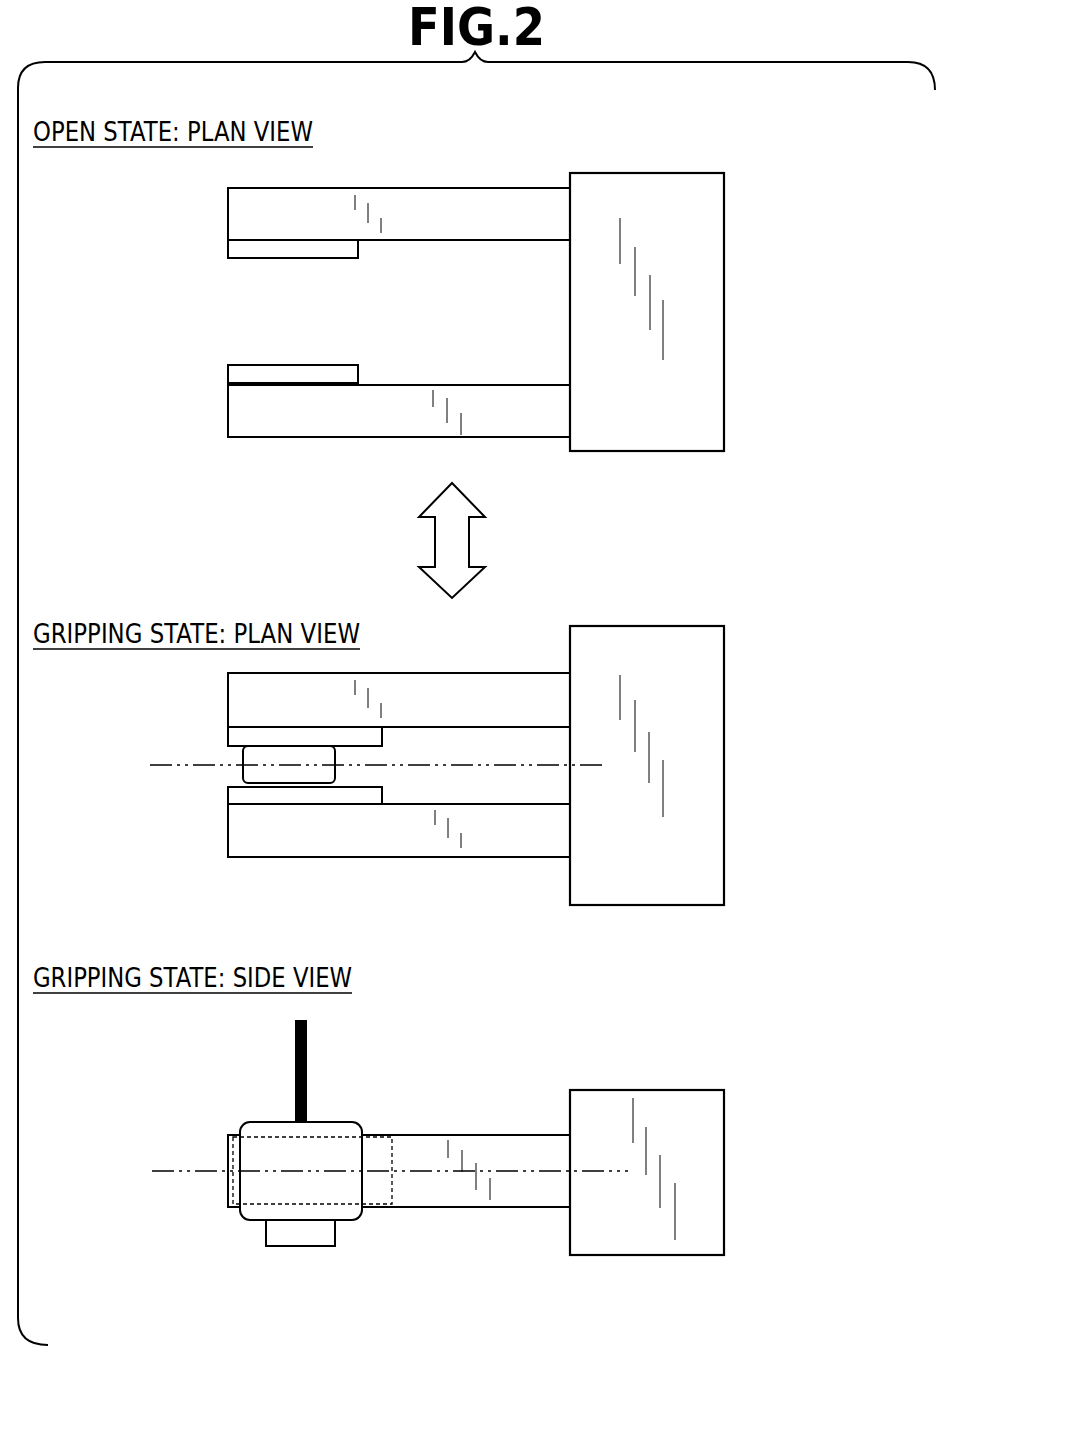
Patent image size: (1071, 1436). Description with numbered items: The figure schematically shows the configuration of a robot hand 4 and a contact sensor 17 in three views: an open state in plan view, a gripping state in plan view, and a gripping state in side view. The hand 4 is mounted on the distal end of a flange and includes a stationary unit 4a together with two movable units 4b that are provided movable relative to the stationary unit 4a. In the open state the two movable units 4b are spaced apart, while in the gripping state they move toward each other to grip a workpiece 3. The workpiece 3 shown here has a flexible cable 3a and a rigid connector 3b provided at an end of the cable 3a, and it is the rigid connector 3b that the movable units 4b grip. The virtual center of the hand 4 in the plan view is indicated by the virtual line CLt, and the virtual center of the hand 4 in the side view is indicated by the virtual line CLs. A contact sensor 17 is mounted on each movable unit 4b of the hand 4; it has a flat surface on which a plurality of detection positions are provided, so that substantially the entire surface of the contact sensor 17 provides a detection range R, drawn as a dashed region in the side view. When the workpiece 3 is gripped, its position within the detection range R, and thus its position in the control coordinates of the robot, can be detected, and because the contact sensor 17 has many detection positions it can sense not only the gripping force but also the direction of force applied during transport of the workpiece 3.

The hand 4 is at (752, 151).
The stationary unit 4a is at (613, 173).
The movable units 4b is at (470, 188).
The contact sensor 17 is at (265, 258).
The workpiece 3 is at (320, 1056).
The flexible cable 3a is at (295, 1076).
The connector 3b is at (243, 771).
The virtual line CLt is at (337, 768).
The virtual line CLs is at (350, 1168).
The detection range R is at (392, 1190).